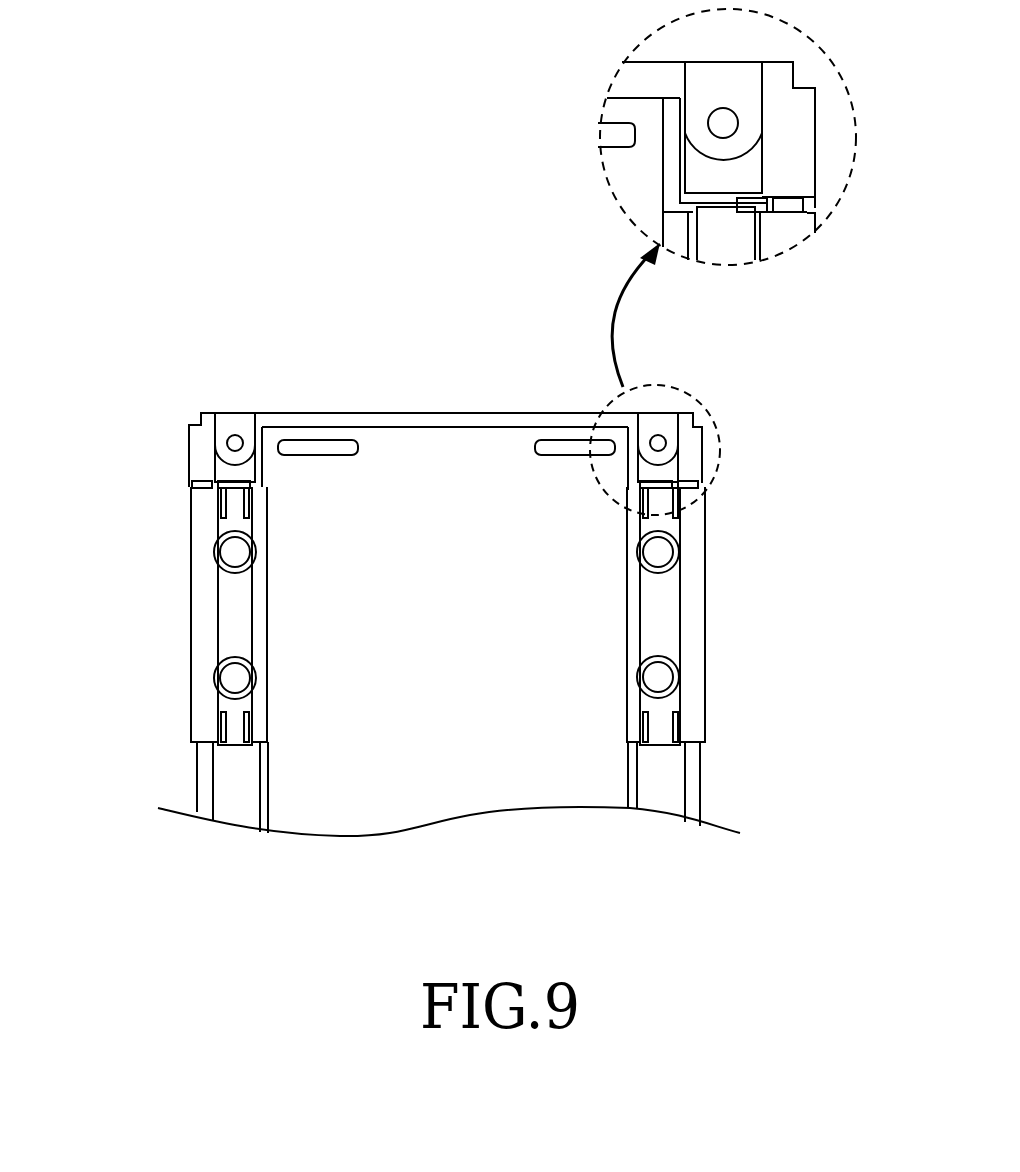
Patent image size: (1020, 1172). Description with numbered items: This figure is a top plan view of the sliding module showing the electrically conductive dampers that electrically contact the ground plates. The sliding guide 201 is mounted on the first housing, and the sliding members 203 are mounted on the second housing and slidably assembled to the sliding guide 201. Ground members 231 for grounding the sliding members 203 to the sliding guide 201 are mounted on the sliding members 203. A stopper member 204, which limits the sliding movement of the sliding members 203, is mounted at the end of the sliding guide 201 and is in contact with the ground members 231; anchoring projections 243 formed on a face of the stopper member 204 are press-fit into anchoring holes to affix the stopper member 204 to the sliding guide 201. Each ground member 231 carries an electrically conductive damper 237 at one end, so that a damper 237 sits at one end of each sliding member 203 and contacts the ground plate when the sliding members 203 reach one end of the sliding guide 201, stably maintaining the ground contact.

The sliding guide 201 is at (453, 800).
The sliding member 203 is at (182, 674).
The stopper member 204 is at (452, 408).
The ground member 231 is at (233, 605).
The electrically conductive damper 237 is at (220, 484).
The anchoring projection 243 is at (330, 438).